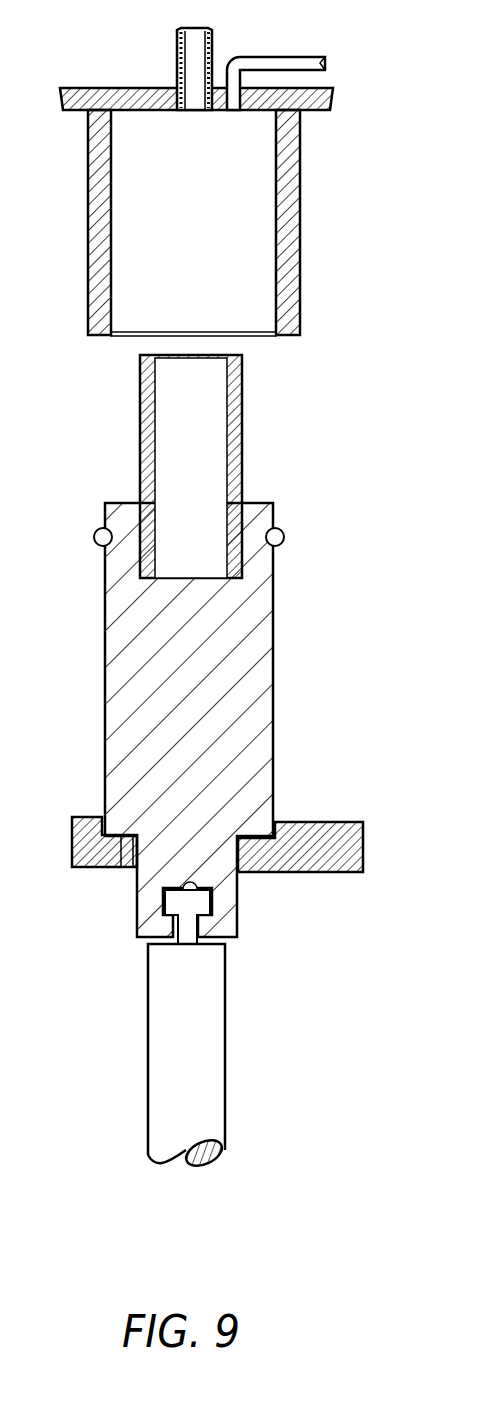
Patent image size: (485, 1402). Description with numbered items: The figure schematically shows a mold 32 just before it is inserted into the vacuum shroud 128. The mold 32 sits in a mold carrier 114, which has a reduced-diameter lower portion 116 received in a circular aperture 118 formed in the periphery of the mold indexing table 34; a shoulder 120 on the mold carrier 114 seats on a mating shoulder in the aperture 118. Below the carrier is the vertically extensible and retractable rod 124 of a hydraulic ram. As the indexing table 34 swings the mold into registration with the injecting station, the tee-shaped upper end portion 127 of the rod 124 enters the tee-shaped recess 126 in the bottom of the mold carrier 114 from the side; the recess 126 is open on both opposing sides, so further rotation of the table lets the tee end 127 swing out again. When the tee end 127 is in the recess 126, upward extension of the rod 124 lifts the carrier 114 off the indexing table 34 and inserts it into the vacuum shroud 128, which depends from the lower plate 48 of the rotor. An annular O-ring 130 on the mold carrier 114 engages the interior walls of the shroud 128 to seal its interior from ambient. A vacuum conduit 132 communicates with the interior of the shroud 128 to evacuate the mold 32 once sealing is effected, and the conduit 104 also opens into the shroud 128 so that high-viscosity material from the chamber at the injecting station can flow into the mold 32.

The mold 32 is at (242, 424).
The mold indexing table 34 is at (330, 812).
The lower plate 48 is at (310, 112).
The conduit 104 is at (176, 50).
The mold carrier 114 is at (278, 658).
The reduced-diameter lower portion 116 is at (214, 900).
The circular aperture 118 is at (198, 880).
The shoulder 120 is at (118, 868).
The rod 124 is at (210, 1107).
The tee-shaped recess 126 is at (206, 912).
The tee-shaped upper end portion 127 is at (165, 908).
The vacuum shroud 128 is at (300, 238).
The O-ring 130 is at (285, 538).
The vacuum conduit 132 is at (281, 56).